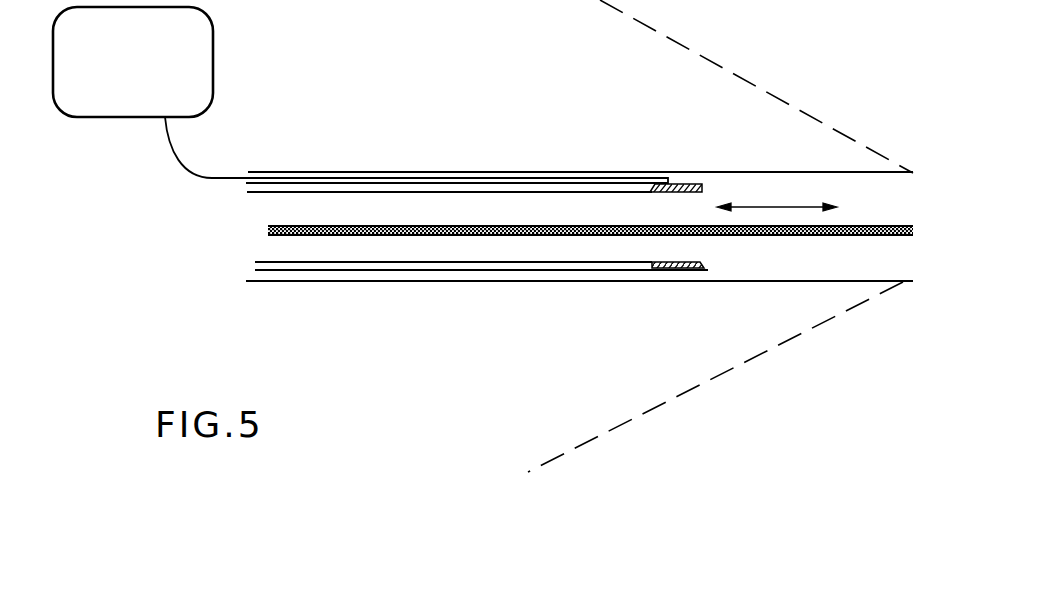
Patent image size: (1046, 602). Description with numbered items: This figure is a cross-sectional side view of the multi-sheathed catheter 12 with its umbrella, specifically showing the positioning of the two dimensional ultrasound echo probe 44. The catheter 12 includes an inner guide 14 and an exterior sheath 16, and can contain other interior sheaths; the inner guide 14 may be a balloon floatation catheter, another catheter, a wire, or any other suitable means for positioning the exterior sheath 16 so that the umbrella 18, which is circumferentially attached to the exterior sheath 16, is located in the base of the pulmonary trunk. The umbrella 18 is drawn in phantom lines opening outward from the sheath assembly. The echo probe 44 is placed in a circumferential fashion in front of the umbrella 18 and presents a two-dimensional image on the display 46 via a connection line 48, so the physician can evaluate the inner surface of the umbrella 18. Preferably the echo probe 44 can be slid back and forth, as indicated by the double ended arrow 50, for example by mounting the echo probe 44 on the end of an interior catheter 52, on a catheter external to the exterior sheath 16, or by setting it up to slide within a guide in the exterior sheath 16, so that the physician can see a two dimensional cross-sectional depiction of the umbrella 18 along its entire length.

The multi-sheathed catheter 12 is at (362, 140).
The inner guide 14 is at (372, 225).
The exterior sheath 16 is at (345, 281).
The umbrella 18 is at (757, 88).
The two dimensional ultrasound echo probe 44 is at (690, 184).
The display 46 is at (140, 72).
The connection line 48 is at (190, 171).
The double ended arrow 50 is at (768, 207).
The interior catheter 52 is at (268, 262).